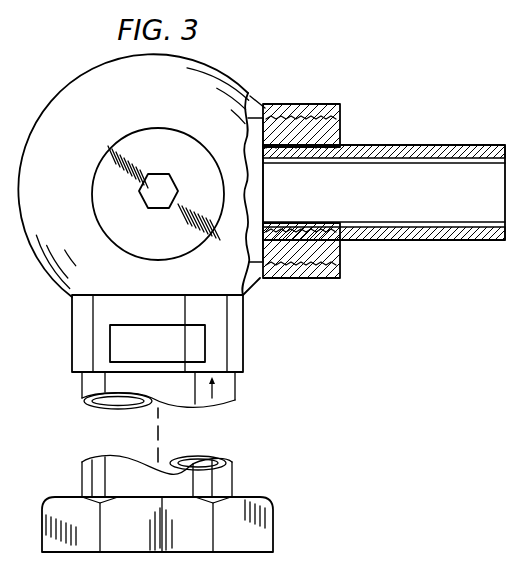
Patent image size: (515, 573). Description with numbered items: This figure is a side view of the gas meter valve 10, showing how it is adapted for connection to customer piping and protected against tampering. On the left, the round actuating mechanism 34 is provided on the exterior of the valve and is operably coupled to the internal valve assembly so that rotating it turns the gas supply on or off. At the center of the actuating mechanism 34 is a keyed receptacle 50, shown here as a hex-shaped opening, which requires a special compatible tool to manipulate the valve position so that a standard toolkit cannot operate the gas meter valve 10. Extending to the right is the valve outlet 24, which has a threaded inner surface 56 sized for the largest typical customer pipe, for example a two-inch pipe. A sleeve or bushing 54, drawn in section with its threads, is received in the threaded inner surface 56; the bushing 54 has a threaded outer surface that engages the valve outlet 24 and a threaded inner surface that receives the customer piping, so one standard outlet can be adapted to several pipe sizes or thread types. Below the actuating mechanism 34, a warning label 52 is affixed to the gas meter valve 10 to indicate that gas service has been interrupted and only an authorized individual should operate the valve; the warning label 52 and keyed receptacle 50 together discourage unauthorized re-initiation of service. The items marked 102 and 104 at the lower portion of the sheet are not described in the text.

The gas meter valve 10 is at (66, 88).
The valve outlet 24 is at (300, 104).
The actuating mechanism 34 is at (92, 193).
The keyed receptacle 50 is at (158, 174).
The warning label 52 is at (205, 345).
The bushing 54 is at (340, 250).
The threaded inner surface 56 is at (330, 127).
The cap 102 is at (298, 452).
The hex nut 104 is at (278, 524).